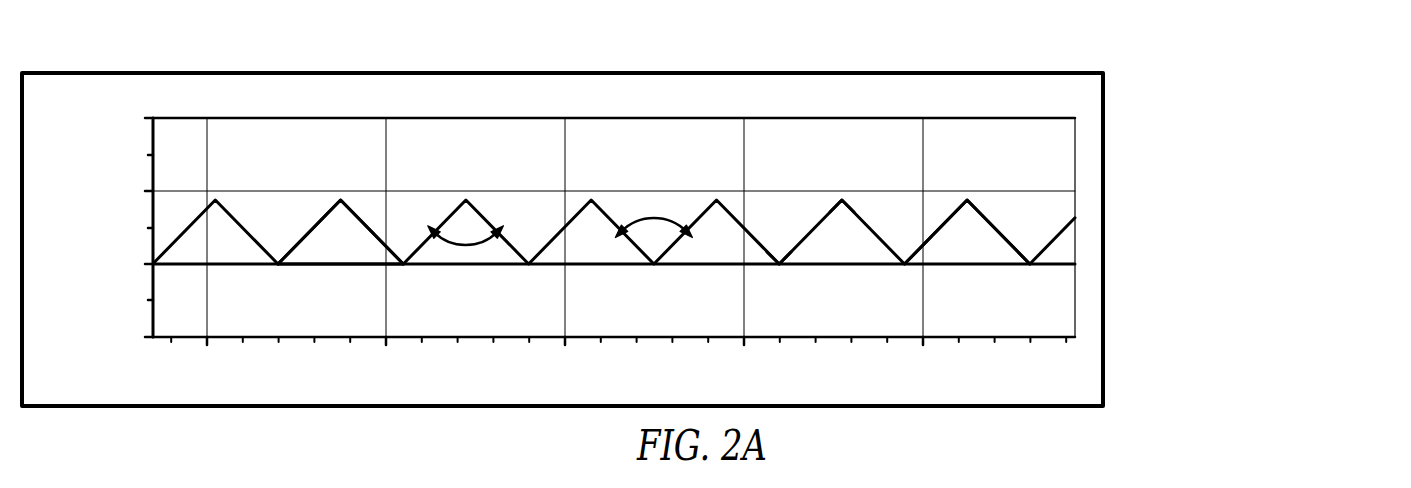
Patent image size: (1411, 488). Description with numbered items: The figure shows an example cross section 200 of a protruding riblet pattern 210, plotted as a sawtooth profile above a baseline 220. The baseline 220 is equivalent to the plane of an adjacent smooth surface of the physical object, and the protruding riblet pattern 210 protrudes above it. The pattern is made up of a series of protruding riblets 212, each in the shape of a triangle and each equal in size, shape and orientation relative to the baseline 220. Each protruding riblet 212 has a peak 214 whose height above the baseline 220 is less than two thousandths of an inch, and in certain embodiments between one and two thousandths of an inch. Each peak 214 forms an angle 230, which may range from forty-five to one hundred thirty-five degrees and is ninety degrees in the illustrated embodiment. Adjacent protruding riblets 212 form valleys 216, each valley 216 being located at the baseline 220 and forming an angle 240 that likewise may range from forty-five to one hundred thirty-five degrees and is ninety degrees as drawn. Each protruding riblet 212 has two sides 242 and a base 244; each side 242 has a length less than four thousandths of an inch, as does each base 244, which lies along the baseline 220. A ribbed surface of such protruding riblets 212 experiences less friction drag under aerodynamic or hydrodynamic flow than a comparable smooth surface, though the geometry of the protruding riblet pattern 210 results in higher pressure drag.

The cross section 200 is at (1140, 89).
The protruding riblet pattern 210 is at (988, 222).
The protruding riblet 212 is at (978, 233).
The peak 214 is at (842, 200).
The valley 216 is at (780, 265).
The baseline 220 is at (607, 265).
The angle 230 is at (466, 246).
The angle 240 is at (657, 218).
The side 242 is at (362, 214).
The base 244 is at (322, 254).